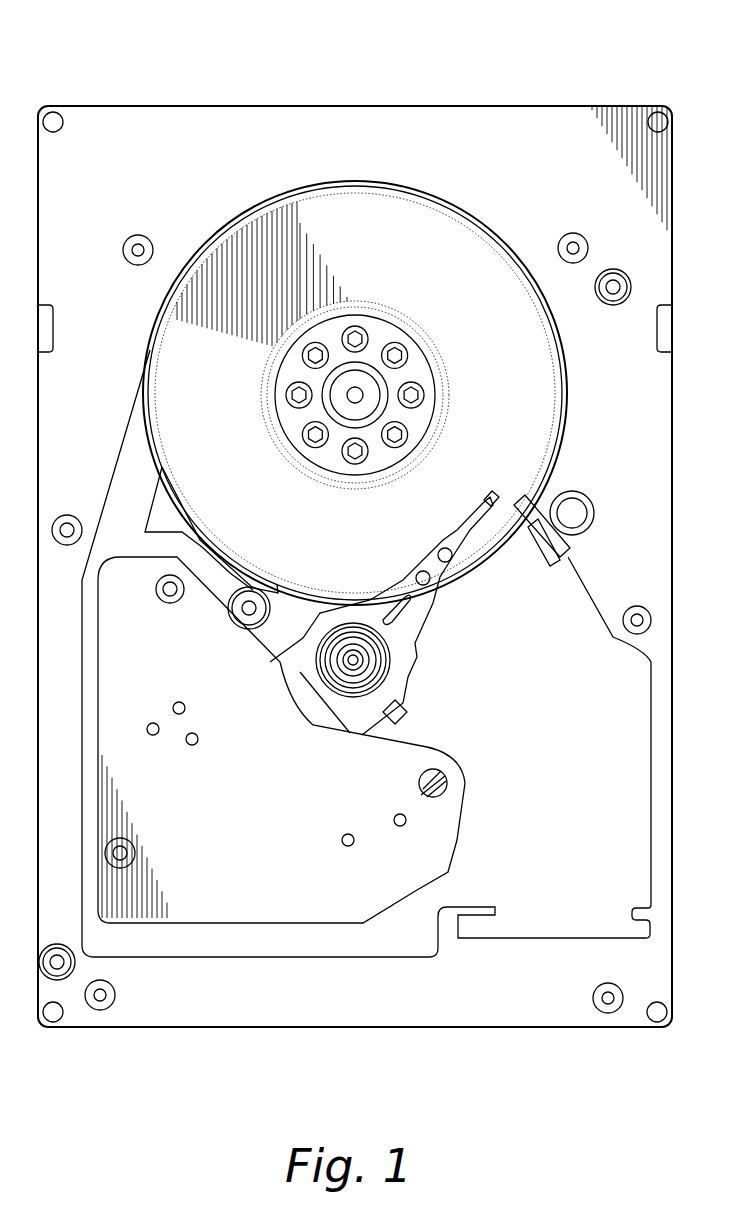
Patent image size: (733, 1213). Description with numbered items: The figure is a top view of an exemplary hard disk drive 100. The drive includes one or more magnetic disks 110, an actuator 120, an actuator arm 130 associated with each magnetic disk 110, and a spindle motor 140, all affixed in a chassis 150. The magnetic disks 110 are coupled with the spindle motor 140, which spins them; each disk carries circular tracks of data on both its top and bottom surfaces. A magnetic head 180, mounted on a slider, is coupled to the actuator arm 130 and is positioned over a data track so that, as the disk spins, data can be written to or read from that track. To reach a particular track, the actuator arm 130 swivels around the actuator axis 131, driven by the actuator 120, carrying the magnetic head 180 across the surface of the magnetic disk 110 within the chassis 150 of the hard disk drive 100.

The hard disk drive 100 is at (578, 43).
The magnetic disk 110 is at (438, 235).
The actuator 120 is at (443, 833).
The actuator arm 130 is at (432, 560).
The actuator axis 131 is at (363, 667).
The spindle motor 140 is at (370, 395).
The chassis 150 is at (147, 107).
The magnetic head 180 is at (488, 500).